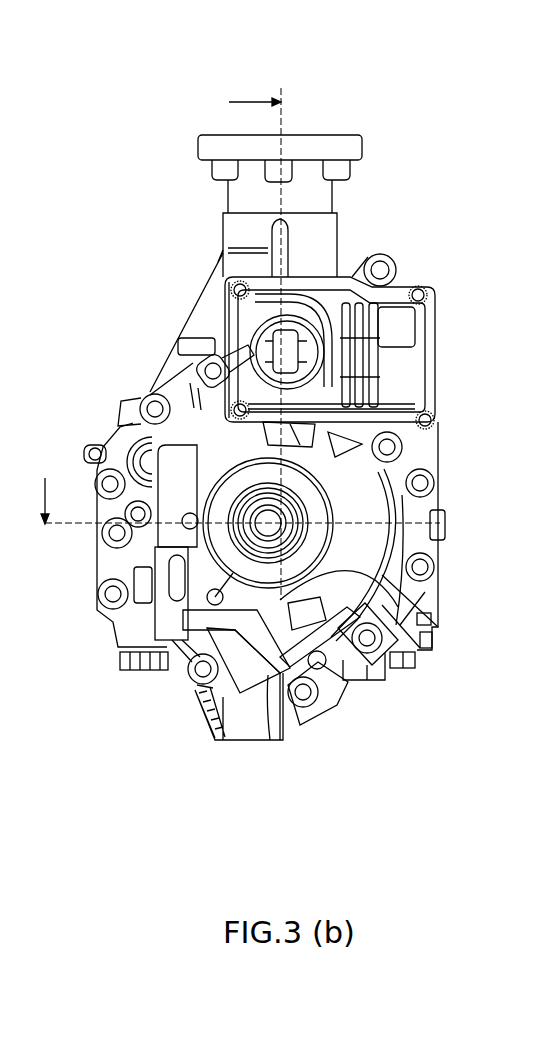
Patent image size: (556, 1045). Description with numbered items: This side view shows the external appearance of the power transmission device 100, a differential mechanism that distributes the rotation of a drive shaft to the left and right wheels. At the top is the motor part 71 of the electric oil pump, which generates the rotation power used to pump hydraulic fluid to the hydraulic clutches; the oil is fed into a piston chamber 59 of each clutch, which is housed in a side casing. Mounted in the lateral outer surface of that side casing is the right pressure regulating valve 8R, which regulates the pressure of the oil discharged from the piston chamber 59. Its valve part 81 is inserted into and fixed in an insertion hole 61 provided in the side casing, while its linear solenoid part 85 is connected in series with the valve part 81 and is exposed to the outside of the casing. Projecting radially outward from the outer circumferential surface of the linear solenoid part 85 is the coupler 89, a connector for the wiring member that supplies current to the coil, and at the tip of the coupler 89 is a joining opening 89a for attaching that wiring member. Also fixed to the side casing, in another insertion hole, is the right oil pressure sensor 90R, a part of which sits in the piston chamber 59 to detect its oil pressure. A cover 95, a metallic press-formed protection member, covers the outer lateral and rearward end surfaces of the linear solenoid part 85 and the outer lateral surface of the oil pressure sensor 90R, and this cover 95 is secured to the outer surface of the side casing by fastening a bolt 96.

The power transmission device 100 is at (432, 137).
The motor part 71 is at (436, 345).
The insertion hole 61 is at (120, 430).
The valve part 81 is at (90, 450).
The right pressure regulating valve 8R is at (145, 567).
The coupler 89 is at (100, 585).
The joining opening 89a is at (147, 615).
The linear solenoid part 85 is at (137, 622).
The cover 95 is at (265, 705).
The piston chamber 59 is at (442, 628).
The bolt 96 is at (417, 650).
The right oil pressure sensor 90R is at (303, 723).